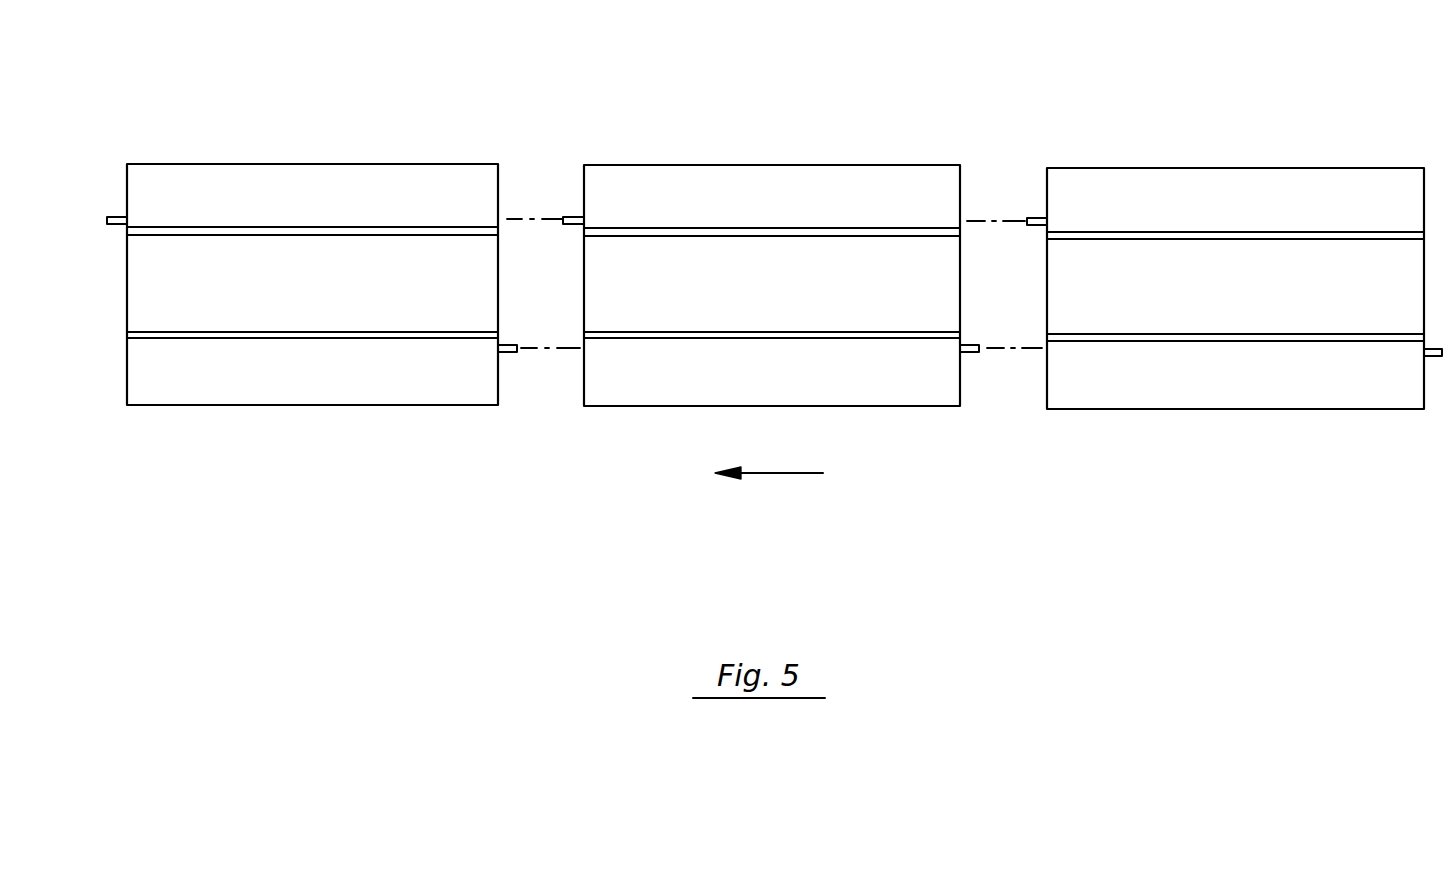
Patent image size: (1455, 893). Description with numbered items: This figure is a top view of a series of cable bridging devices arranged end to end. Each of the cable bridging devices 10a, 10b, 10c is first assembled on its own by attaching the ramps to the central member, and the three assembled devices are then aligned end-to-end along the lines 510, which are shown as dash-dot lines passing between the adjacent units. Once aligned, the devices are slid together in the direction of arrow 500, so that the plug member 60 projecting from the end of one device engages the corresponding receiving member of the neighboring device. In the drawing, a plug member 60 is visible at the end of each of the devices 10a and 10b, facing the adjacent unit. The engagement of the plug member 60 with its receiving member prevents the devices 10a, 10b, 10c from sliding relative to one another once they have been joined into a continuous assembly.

The cable bridging device 10a is at (1240, 152).
The cable bridging device 10b is at (782, 145).
The cable bridging device 10c is at (334, 140).
The plug member 60 is at (570, 215).
The lines 510 is at (537, 352).
The arrow 500 is at (770, 476).